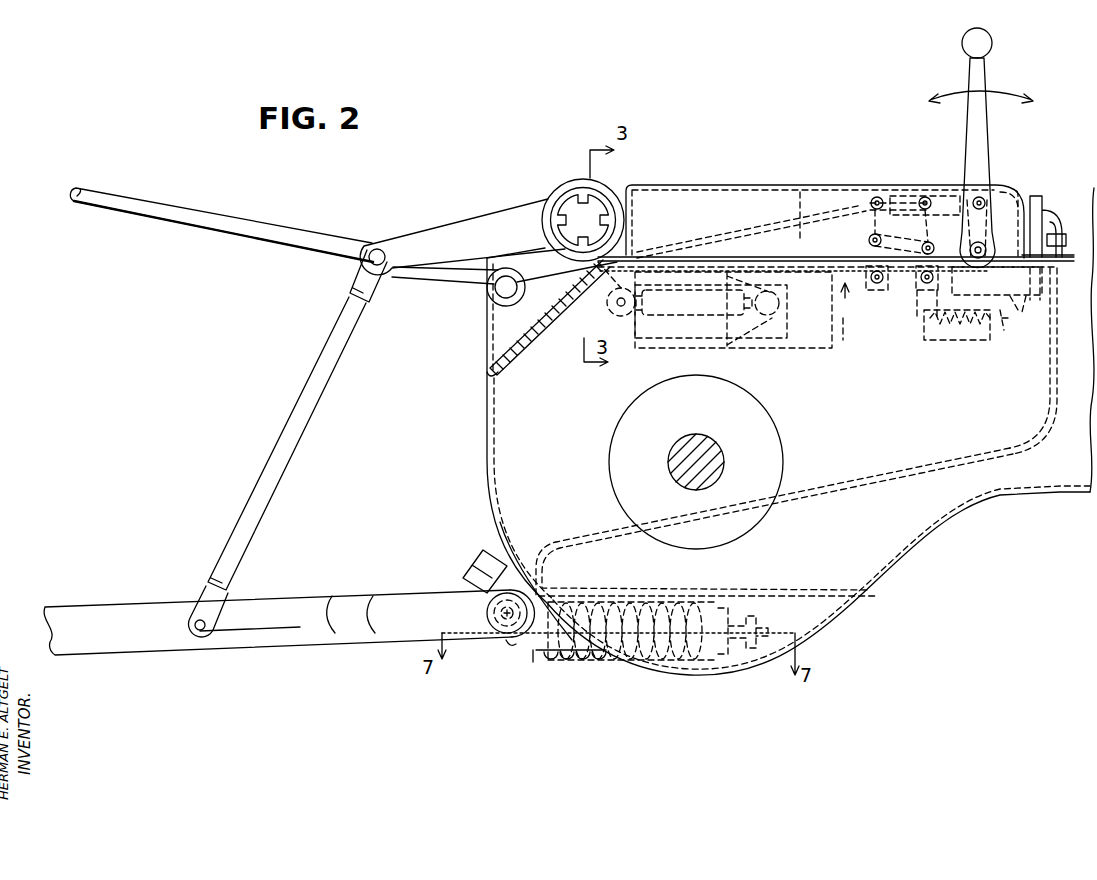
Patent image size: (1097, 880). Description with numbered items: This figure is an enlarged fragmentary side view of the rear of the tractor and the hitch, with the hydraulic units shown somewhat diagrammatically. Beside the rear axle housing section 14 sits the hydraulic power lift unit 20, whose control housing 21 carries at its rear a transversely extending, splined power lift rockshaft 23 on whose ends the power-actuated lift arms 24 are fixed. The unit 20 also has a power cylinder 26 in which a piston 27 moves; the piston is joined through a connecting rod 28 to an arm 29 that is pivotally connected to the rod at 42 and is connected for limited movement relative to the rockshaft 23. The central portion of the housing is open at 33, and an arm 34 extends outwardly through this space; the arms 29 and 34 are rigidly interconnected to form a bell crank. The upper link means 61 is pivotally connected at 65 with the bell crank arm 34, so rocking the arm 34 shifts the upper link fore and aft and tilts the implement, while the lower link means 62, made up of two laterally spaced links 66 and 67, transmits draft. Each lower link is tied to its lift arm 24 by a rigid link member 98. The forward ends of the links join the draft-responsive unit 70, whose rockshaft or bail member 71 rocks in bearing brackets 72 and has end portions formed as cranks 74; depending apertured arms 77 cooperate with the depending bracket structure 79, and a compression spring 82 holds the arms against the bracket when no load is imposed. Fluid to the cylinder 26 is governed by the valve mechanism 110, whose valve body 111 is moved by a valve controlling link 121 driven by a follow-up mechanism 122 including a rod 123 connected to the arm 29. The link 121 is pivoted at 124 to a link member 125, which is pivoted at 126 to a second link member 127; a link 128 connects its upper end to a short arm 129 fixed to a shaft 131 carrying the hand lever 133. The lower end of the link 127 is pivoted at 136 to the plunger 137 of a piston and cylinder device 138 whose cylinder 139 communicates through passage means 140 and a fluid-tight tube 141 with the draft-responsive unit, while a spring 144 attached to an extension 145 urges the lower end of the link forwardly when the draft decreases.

The rear axle housing section 14 is at (776, 437).
The power lift unit 20 is at (746, 173).
The control housing 21 is at (841, 187).
The power lift rockshaft 23 is at (590, 212).
The lift arm 24 is at (438, 238).
The power cylinder 26 is at (822, 352).
The piston 27 is at (790, 346).
The connecting rod 28 is at (680, 322).
The arm 29 is at (578, 314).
The opening 33 is at (506, 318).
The arm 34 is at (534, 264).
The pivotal connection 42 is at (622, 318).
The upper link means 61 is at (182, 199).
The lower link means 62 is at (289, 611).
The pivotal connection 65 is at (488, 298).
The lower link 66 is at (300, 637).
The lower link 67 is at (360, 632).
The draft-responsive unit 70 is at (578, 675).
The rockshaft or bail member 71 is at (520, 564).
The bearing bracket 72 is at (476, 562).
The crank 74 is at (500, 622).
The apertured arm 77 is at (513, 646).
The depending bracket structure 79 is at (534, 655).
The compression spring 82 is at (594, 662).
The rigid link member 98 is at (313, 399).
The valve mechanism 110 is at (856, 300).
The valve body 111 is at (862, 329).
The valve controlling link 121 is at (870, 218).
The follow-up mechanism 122 is at (773, 222).
The rod 123 is at (800, 192).
The pivot 124 is at (868, 242).
The link member 125 is at (882, 280).
The pivotal connection 126 is at (997, 281).
The second link member 127 is at (915, 192).
The link 128 is at (950, 187).
The short arm 129 is at (1002, 198).
The shaft 131 is at (984, 246).
The hand lever 133 is at (980, 67).
The pivotal connection 136 is at (925, 290).
The plunger 137 is at (1016, 301).
The piston and cylinder device 138 is at (1012, 330).
The cylinder 139 is at (1042, 300).
The passage means 140 is at (1040, 391).
The fluid-tight tube 141 is at (905, 475).
The spring 144 is at (962, 330).
The extension 145 is at (922, 326).